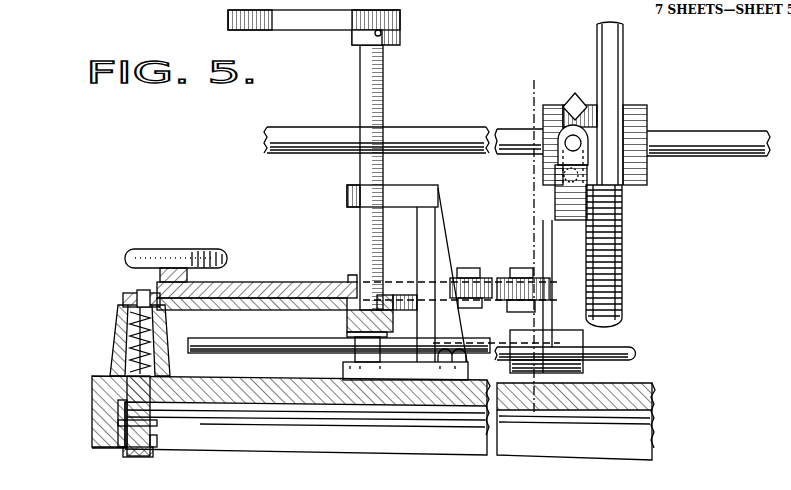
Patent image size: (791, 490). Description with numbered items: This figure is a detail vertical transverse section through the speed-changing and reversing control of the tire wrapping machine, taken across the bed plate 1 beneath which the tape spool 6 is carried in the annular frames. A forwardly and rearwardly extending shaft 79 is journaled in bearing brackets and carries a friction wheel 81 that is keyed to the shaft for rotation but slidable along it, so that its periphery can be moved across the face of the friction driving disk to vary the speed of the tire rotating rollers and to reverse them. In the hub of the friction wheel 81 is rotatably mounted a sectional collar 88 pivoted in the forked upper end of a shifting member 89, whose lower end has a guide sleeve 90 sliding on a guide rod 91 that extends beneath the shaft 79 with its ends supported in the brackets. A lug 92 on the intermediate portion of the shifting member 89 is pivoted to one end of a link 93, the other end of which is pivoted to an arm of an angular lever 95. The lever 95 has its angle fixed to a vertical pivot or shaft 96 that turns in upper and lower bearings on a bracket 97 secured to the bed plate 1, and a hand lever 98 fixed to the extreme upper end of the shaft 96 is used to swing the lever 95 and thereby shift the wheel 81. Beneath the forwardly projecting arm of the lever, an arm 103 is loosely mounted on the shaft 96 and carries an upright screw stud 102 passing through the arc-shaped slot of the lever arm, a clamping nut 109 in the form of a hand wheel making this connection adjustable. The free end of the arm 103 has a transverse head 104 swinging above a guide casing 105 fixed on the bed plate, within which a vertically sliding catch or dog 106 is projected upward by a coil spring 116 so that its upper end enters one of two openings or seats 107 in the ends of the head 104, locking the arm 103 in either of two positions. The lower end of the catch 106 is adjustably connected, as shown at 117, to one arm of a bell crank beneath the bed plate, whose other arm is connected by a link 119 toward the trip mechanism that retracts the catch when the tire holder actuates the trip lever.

The bed plate 1 is at (430, 405).
The tape spool 6 is at (541, 256).
The shaft 79 is at (709, 141).
The friction wheel 81 is at (614, 79).
The sectional collar 88 is at (549, 110).
The shifting member 89 is at (560, 228).
The guide sleeve 90 is at (585, 378).
The guide rod 91 is at (625, 352).
The lug 92 is at (505, 301).
The link 93 is at (464, 272).
The angular lever 95 is at (278, 278).
The vertical pivot shaft 96 is at (360, 223).
The bracket 97 is at (428, 195).
The hand lever 98 is at (305, 24).
The screw stud 102 is at (193, 263).
The arm 103 is at (300, 303).
The transverse head 104 is at (124, 298).
The guide casing 105 is at (113, 352).
The catch or dog 106 is at (120, 313).
The opening or seat 107 is at (140, 290).
The clamping nut 109 is at (143, 253).
The coil spring 116 is at (175, 353).
The adjustable connection 117 is at (170, 427).
The link 119 is at (125, 456).